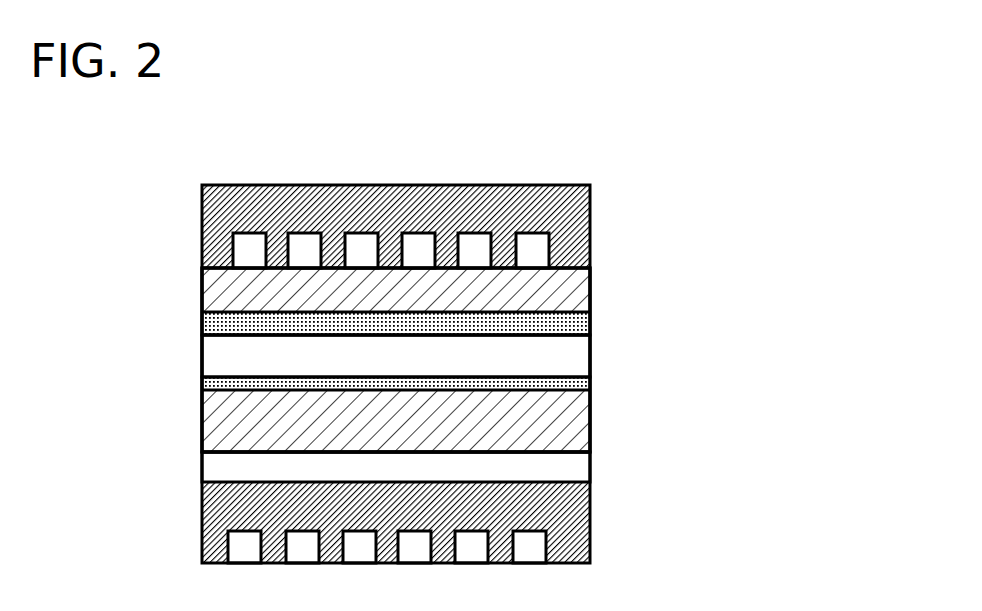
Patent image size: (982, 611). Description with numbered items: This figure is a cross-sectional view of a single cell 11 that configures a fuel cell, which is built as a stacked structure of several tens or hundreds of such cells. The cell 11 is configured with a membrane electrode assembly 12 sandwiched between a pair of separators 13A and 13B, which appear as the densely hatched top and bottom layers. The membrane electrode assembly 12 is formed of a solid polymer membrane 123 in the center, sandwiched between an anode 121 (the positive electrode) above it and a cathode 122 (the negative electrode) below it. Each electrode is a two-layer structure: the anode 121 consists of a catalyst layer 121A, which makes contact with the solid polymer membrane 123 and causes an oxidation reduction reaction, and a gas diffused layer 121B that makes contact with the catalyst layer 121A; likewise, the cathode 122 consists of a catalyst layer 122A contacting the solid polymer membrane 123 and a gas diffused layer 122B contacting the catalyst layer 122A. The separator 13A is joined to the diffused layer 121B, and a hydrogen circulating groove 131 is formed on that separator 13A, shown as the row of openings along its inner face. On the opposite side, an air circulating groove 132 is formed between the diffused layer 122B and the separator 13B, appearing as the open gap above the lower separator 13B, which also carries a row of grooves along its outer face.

The cell 11 is at (622, 162).
The membrane electrode assembly 12 is at (810, 365).
The separator 13A is at (590, 213).
The separator 13B is at (590, 525).
The hydrogen circulating groove 131 is at (540, 251).
The air circulating groove 132 is at (575, 468).
The anode 121 is at (737, 270).
The catalyst layer 121A is at (575, 325).
The gas diffused layer 121B is at (580, 285).
The cathode 122 is at (737, 382).
The catalyst layer 122A is at (575, 385).
The gas diffused layer 122B is at (575, 432).
The solid polymer membrane 123 is at (573, 360).